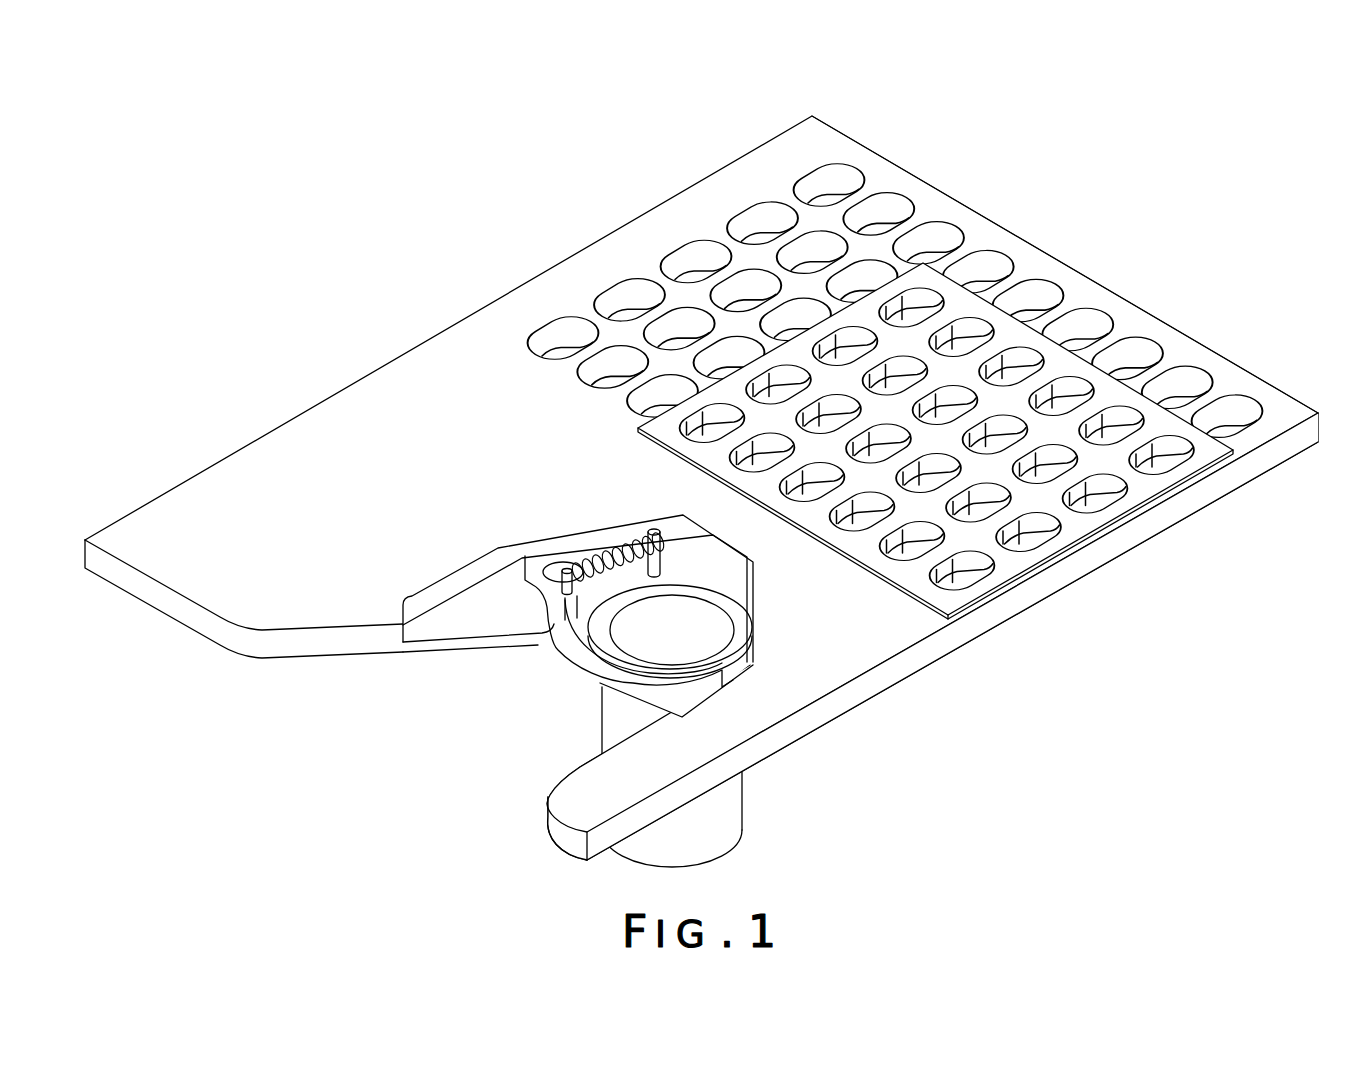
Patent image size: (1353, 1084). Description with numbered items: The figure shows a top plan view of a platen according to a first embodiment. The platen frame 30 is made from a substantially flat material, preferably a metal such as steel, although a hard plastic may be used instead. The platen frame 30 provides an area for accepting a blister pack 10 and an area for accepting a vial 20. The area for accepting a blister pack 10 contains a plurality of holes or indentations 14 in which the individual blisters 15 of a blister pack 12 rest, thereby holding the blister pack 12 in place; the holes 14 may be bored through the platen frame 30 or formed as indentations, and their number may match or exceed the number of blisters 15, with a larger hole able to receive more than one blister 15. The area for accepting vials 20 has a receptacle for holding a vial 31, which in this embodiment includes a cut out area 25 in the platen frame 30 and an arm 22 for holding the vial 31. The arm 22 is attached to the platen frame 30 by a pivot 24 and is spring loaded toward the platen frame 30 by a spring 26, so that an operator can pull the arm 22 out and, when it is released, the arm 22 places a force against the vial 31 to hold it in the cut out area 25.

The area for accepting a blister pack 10 is at (747, 116).
The blister pack 12 is at (1208, 455).
The holes or indentations 14 is at (1093, 327).
The blisters 15 is at (1100, 492).
The area for accepting a vial 20 is at (373, 333).
The arm 22 is at (573, 672).
The pivot 24 is at (548, 563).
The cut out area 25 is at (522, 722).
The spring 26 is at (611, 552).
The platen frame 30 is at (897, 163).
The vial 31 is at (743, 800).